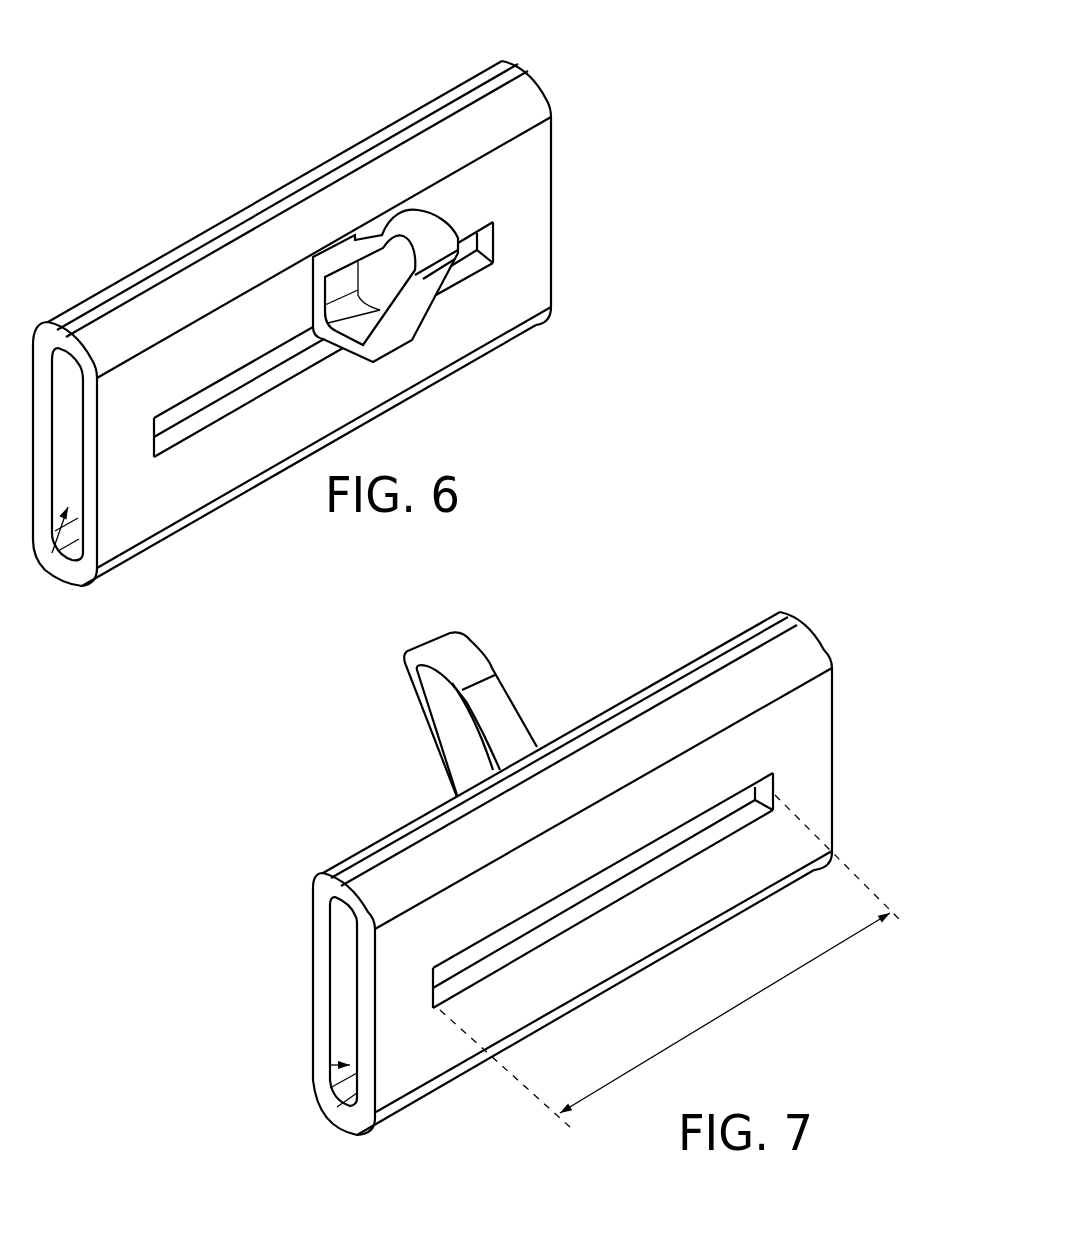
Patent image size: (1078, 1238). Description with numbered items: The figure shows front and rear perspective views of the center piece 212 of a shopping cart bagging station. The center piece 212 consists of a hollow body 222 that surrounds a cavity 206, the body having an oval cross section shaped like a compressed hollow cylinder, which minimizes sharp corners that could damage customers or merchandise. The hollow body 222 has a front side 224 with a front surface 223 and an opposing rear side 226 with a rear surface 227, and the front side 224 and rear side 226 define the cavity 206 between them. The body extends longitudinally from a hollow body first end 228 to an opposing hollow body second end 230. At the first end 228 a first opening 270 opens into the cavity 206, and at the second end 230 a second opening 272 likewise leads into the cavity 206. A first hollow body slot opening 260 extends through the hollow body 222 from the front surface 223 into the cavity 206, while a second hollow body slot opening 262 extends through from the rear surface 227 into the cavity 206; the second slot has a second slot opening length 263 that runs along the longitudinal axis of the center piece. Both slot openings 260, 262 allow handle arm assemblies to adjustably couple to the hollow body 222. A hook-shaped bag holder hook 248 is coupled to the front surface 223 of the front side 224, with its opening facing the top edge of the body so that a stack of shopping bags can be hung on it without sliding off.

In FIG. 6, the cavity 206 is at (52, 553).
In FIG. 7, the cavity 206 is at (350, 1065).
In FIG. 6, the center piece 212 is at (270, 62).
In FIG. 7, the center piece 212 is at (618, 600).
In FIG. 6, the hollow body 222 is at (523, 102).
In FIG. 7, the hollow body 222 is at (807, 653).
In FIG. 6, the front surface 223 is at (247, 470).
In FIG. 6, the front side 224 is at (235, 333).
In FIG. 7, the rear side 226 is at (437, 1055).
In FIG. 7, the rear surface 227 is at (814, 745).
In FIG. 6, the hollow body first end 228 is at (93, 590).
In FIG. 7, the hollow body first end 228 is at (803, 604).
In FIG. 6, the hollow body second end 230 is at (555, 324).
In FIG. 7, the hollow body second end 230 is at (313, 860).
In FIG. 6, the bag holder hook 248 is at (433, 228).
In FIG. 7, the bag holder hook 248 is at (462, 658).
In FIG. 6, the first hollow body slot opening 260 is at (463, 247).
In FIG. 7, the second hollow body slot opening 262 is at (657, 847).
In FIG. 7, the second slot opening length 263 is at (833, 948).
In FIG. 6, the first opening 270 is at (68, 352).
In FIG. 7, the second opening 272 is at (332, 932).